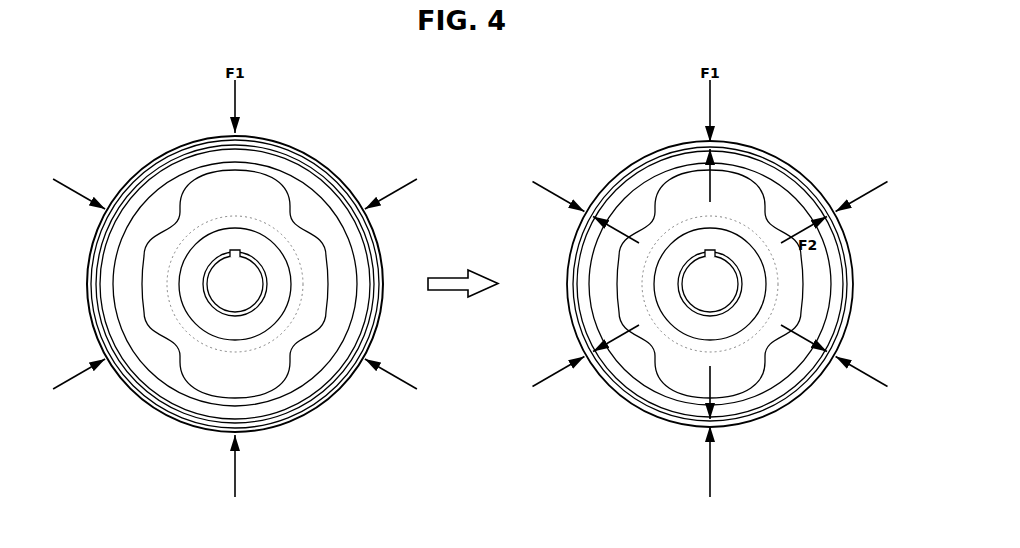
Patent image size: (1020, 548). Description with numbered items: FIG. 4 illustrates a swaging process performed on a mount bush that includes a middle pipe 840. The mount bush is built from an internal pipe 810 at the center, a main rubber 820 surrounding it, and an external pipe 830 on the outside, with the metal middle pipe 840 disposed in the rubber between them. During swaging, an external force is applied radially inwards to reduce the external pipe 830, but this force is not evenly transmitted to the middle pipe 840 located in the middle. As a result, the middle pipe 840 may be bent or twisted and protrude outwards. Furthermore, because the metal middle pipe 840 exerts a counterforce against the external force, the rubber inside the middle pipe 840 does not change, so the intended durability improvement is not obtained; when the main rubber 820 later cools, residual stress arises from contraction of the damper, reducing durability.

The internal pipe 810 is at (255, 242).
The main rubber 820 is at (128, 302).
The external pipe 830 is at (303, 405).
The middle pipe 840 is at (163, 393).